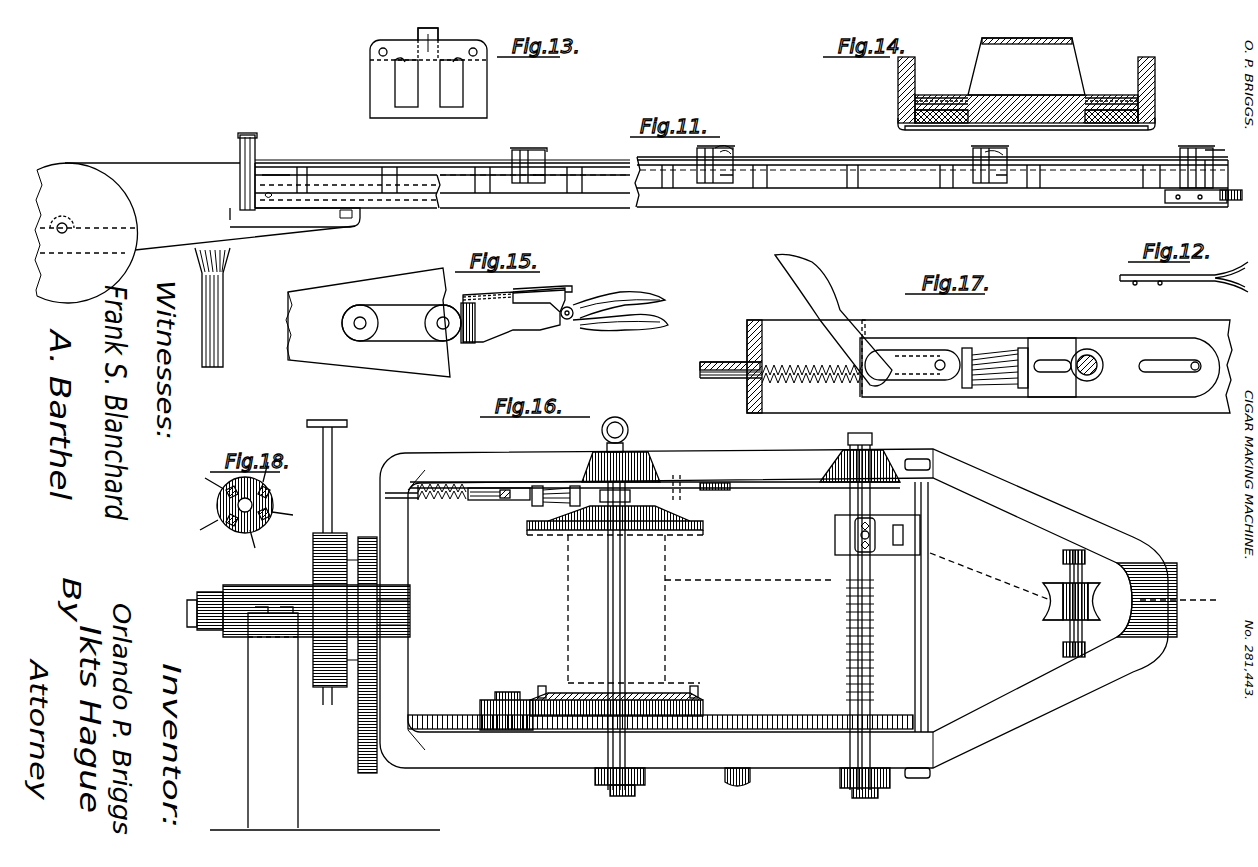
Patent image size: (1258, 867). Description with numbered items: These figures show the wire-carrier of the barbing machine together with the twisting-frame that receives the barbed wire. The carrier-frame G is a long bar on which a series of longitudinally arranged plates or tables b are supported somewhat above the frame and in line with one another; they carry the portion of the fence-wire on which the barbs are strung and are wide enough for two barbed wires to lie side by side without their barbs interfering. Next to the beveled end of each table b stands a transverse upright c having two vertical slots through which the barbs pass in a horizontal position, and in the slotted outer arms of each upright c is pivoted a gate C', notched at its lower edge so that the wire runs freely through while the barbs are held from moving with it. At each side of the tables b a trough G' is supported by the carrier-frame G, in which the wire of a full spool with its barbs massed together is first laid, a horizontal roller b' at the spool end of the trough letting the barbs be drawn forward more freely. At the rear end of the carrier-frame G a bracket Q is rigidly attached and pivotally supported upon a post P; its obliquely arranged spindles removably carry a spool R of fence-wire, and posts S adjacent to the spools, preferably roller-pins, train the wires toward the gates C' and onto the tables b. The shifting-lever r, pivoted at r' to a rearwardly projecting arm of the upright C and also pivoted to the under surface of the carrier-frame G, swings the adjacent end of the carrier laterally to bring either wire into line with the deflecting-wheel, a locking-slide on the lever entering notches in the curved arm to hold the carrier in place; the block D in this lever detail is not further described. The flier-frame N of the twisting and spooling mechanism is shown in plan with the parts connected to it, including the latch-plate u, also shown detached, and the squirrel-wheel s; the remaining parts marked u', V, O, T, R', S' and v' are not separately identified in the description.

In FIG. 13, the gate C' is at (422, 62).
In FIG. 11, the gate C' is at (966, 146).
In FIG. 13, the transverse upright c is at (372, 90).
In FIG. 11, the transverse upright c is at (530, 183).
In FIG. 14, the supporting-plate (table) b is at (1026, 66).
In FIG. 11, the supporting-plate (table) b is at (442, 150).
In FIG. 14, the horizontal roller b' is at (1026, 87).
In FIG. 14, the trough G' is at (1021, 93).
In FIG. 11, the trough G' is at (430, 196).
In FIG. 14, the carrier-frame G is at (1026, 109).
In FIG. 11, the carrier-frame G is at (834, 193).
In FIG. 11, the post (roller-pin) S is at (235, 168).
In FIG. 18, the post (roller-pin) S is at (250, 505).
In FIG. 11, the spool R is at (86, 233).
In FIG. 11, the bracket Q is at (160, 225).
In FIG. 11, the post P is at (220, 307).
In FIG. 15, the block D is at (368, 322).
In FIG. 15, the pivot r' is at (401, 335).
In FIG. 15, the shifting-lever r is at (518, 322).
In FIG. 11, the upright C is at (1183, 190).
In FIG. 17, the latch-plate u is at (989, 366).
In FIG. 16, the latch-plate u is at (655, 480).
In FIG. 17, the spring u' is at (995, 394).
In FIG. 16, the spring u' is at (537, 516).
In FIG. 17, the screw shaft V is at (1062, 374).
In FIG. 16, the screw shaft V is at (845, 555).
In FIG. 17, the vertical shaft O is at (1095, 378).
In FIG. 16, the vertical shaft O is at (627, 568).
In FIG. 16, the flier-frame (twisting-frame) N is at (1030, 513).
In FIG. 16, the standard T is at (325, 718).
In FIG. 16, the drive shaft R' is at (445, 596).
In FIG. 16, the squirrel-wheel s is at (1050, 612).
In FIG. 16, the spool flange S' is at (1070, 576).
In FIG. 16, the nut v' is at (626, 497).